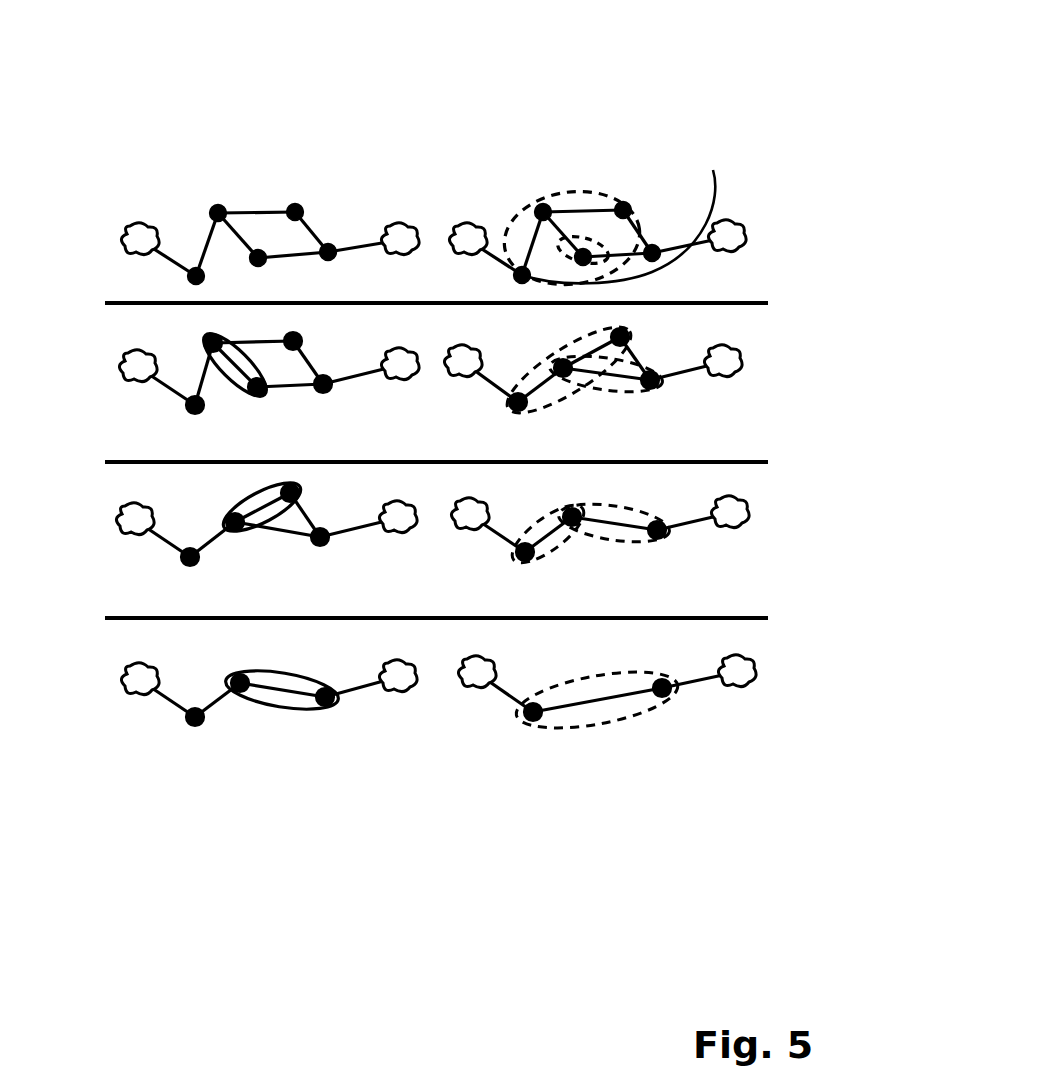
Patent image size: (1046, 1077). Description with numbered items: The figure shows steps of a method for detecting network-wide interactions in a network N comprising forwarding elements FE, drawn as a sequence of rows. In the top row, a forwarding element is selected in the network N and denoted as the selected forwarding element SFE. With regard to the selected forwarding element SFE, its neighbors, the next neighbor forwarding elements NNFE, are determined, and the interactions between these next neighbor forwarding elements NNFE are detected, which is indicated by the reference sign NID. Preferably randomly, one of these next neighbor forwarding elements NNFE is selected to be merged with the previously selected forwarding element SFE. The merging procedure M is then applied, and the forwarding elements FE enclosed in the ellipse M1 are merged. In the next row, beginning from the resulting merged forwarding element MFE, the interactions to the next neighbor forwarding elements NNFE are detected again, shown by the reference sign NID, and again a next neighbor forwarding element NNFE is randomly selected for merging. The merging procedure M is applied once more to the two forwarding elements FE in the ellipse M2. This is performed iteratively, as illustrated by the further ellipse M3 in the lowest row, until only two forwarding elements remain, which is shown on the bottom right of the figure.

The network N is at (127, 195).
The selected forwarding element SFE is at (212, 205).
The next neighbor forwarding elements NNFE is at (206, 262).
The forwarding elements FE is at (339, 240).
The neighbor interaction detection NID is at (422, 285).
The merging procedure M is at (416, 322).
The ellipse M1 is at (222, 392).
The ellipse M2 is at (237, 533).
The merged network after third iteration M3 is at (250, 700).
The merged forwarding element MFE is at (575, 380).